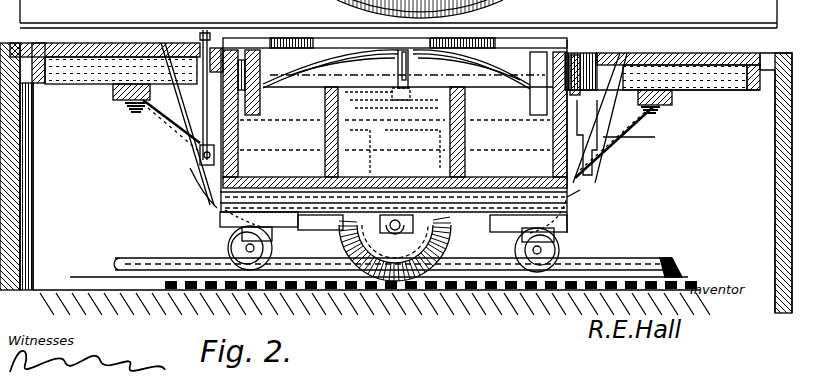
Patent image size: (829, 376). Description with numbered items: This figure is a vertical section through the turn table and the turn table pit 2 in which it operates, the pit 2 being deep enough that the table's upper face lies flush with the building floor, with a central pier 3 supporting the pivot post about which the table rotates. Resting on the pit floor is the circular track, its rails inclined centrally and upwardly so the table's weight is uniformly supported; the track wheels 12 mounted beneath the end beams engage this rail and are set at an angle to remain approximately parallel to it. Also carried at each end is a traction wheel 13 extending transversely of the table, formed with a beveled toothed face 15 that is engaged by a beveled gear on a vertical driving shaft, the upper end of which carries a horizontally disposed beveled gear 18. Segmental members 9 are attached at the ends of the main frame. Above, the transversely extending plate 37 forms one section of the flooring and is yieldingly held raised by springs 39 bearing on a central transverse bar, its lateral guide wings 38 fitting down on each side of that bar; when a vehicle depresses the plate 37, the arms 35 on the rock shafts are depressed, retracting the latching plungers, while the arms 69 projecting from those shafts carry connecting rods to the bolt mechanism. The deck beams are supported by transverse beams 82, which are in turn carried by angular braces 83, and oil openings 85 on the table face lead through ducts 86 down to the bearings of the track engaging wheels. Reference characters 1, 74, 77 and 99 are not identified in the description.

The car body 1 is at (497, 137).
The turn table pit 2 is at (710, 186).
The central pier 3 is at (42, 28).
The segmental members 9 is at (727, 40).
The track wheels 12 is at (560, 248).
The traction wheels 13 is at (425, 240).
The toothed face 15 is at (340, 230).
The beveled gear 18 is at (428, 99).
The arm 35 is at (410, 57).
The transversely extending plate 37 is at (523, 40).
The lateral guide wings 38 is at (250, 60).
The springs 39 is at (541, 57).
The arms 69 is at (628, 53).
The vertical rod 74 is at (205, 32).
The link 77 is at (640, 142).
The transverse beams 82 is at (668, 104).
The angular braces 83 is at (607, 156).
The oil openings 85 is at (173, 115).
The ducts 86 is at (198, 176).
The guide 99 is at (769, 103).